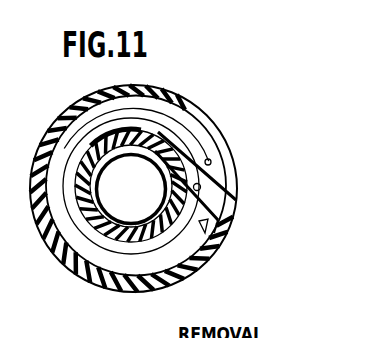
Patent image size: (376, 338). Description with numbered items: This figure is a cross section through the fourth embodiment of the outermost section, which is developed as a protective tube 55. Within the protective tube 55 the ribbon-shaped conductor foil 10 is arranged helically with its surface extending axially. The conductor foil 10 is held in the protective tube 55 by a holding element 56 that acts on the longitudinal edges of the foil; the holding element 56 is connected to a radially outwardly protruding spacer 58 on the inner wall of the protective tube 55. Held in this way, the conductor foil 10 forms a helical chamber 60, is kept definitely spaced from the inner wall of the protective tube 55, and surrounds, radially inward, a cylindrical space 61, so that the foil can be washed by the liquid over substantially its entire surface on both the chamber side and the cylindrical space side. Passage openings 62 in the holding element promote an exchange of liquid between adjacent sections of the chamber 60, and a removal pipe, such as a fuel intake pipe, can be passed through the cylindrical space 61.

The conductor foil 10 is at (142, 174).
The protective tube 55 is at (205, 122).
The holding element 56 is at (205, 234).
The spacer 58 is at (211, 162).
The helical chamber 60 is at (85, 130).
The cylindrical space 61 is at (184, 108).
The passage openings 62 is at (201, 186).